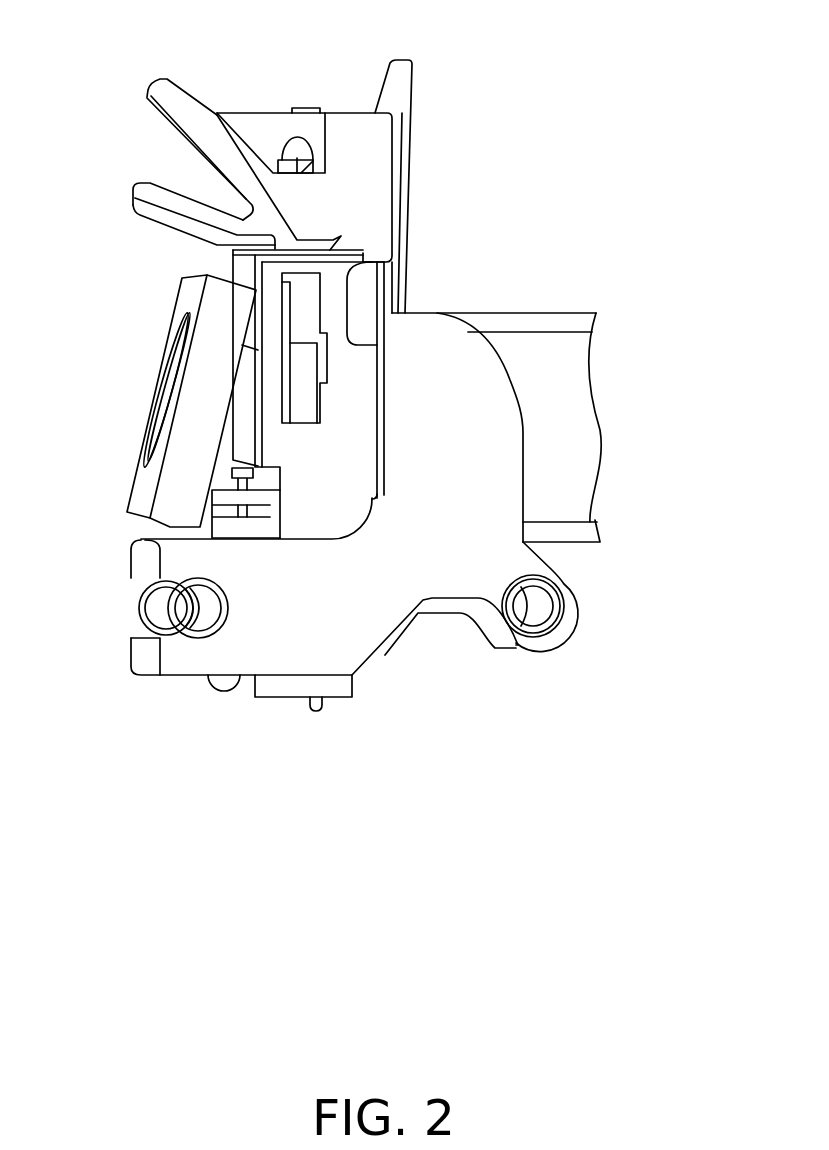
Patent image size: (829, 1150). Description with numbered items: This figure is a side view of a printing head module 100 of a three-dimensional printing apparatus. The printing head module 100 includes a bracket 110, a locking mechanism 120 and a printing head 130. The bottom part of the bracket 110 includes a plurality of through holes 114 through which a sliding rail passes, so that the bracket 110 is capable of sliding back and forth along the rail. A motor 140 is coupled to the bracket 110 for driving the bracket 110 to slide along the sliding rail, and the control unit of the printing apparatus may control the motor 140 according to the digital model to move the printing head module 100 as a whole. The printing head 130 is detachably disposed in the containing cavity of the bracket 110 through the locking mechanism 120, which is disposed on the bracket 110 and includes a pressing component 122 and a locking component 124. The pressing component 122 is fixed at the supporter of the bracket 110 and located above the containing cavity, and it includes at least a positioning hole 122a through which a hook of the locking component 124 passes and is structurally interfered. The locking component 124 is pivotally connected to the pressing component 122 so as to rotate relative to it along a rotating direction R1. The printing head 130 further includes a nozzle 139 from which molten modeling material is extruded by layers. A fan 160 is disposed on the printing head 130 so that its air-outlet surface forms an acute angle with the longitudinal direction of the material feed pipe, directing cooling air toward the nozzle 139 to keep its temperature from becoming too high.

The printing head module 100 is at (703, 891).
The bracket 110 is at (352, 652).
The through holes 114 is at (521, 604).
The locking mechanism 120 is at (310, 155).
The pressing component 122 is at (192, 102).
The positioning hole 122a is at (297, 147).
The locking component 124 is at (177, 222).
The printing head 130 is at (352, 390).
The nozzle 139 is at (315, 707).
The motor 140 is at (577, 402).
The fan 160 is at (197, 398).
The rotating direction R1 is at (116, 121).